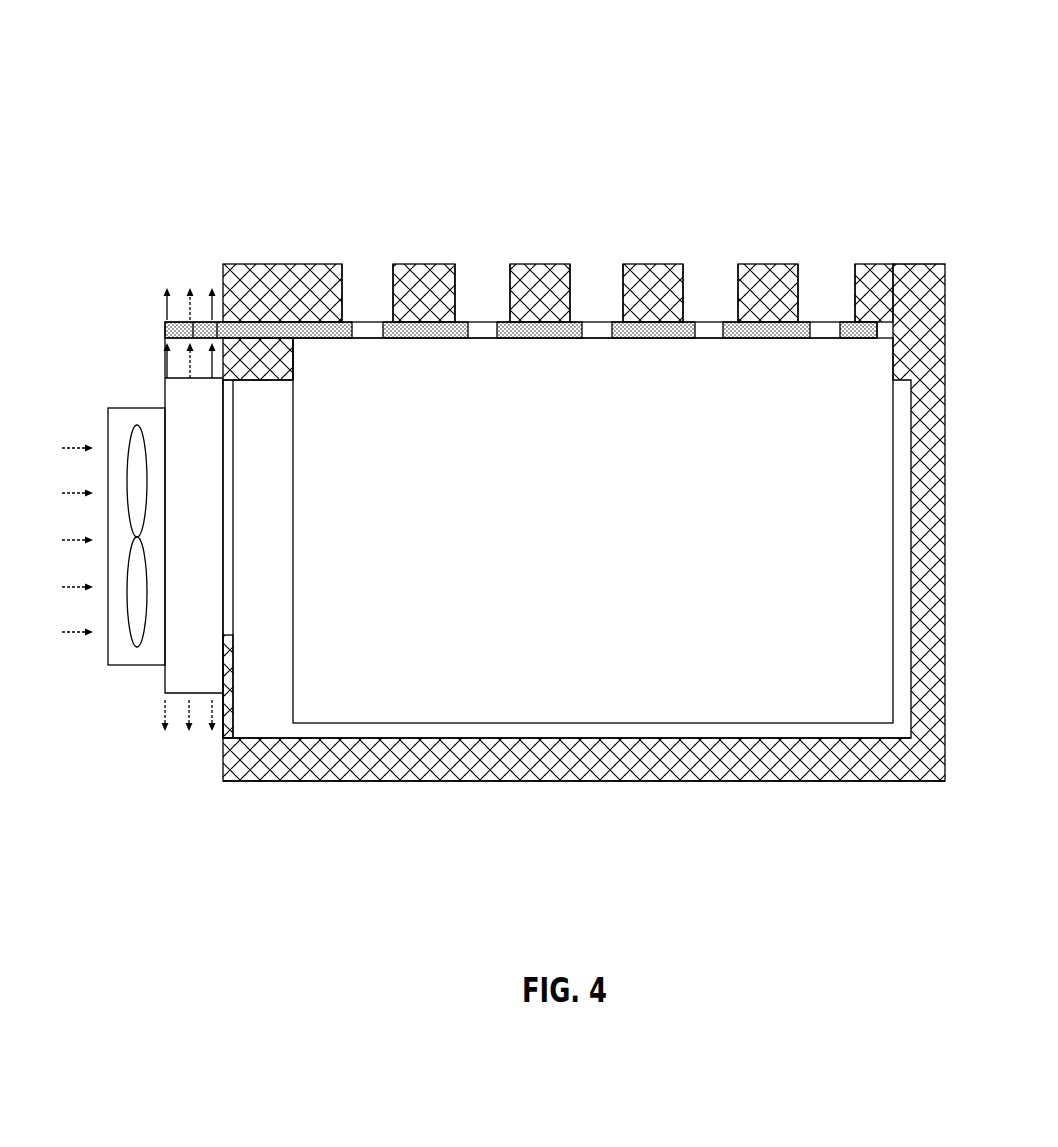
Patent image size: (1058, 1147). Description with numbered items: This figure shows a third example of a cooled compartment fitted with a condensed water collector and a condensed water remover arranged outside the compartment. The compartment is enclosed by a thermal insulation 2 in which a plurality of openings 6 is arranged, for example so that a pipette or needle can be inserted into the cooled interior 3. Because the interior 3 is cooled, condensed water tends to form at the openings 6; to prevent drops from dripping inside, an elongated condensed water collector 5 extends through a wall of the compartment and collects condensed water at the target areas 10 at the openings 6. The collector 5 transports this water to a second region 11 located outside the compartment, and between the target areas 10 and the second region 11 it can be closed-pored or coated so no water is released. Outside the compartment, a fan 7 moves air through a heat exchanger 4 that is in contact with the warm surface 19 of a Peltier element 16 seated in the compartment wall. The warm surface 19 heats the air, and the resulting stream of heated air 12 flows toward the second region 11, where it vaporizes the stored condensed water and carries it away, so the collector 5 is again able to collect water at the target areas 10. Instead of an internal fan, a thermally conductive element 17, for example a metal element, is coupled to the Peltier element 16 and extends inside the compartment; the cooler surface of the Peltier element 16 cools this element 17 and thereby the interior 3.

The thermal insulation 2 is at (893, 264).
The interior 3 is at (528, 710).
The heat exchanger 4 is at (177, 682).
The condensed water collector 5 is at (533, 327).
The openings 6 is at (598, 296).
The fan 7 is at (120, 637).
The target areas 10 is at (260, 330).
The second region 11 is at (177, 298).
The stream of heated air 12 is at (163, 346).
The Peltier element 16 is at (227, 637).
The thermally conductive element 17 is at (680, 727).
The warm surface 19 is at (222, 597).